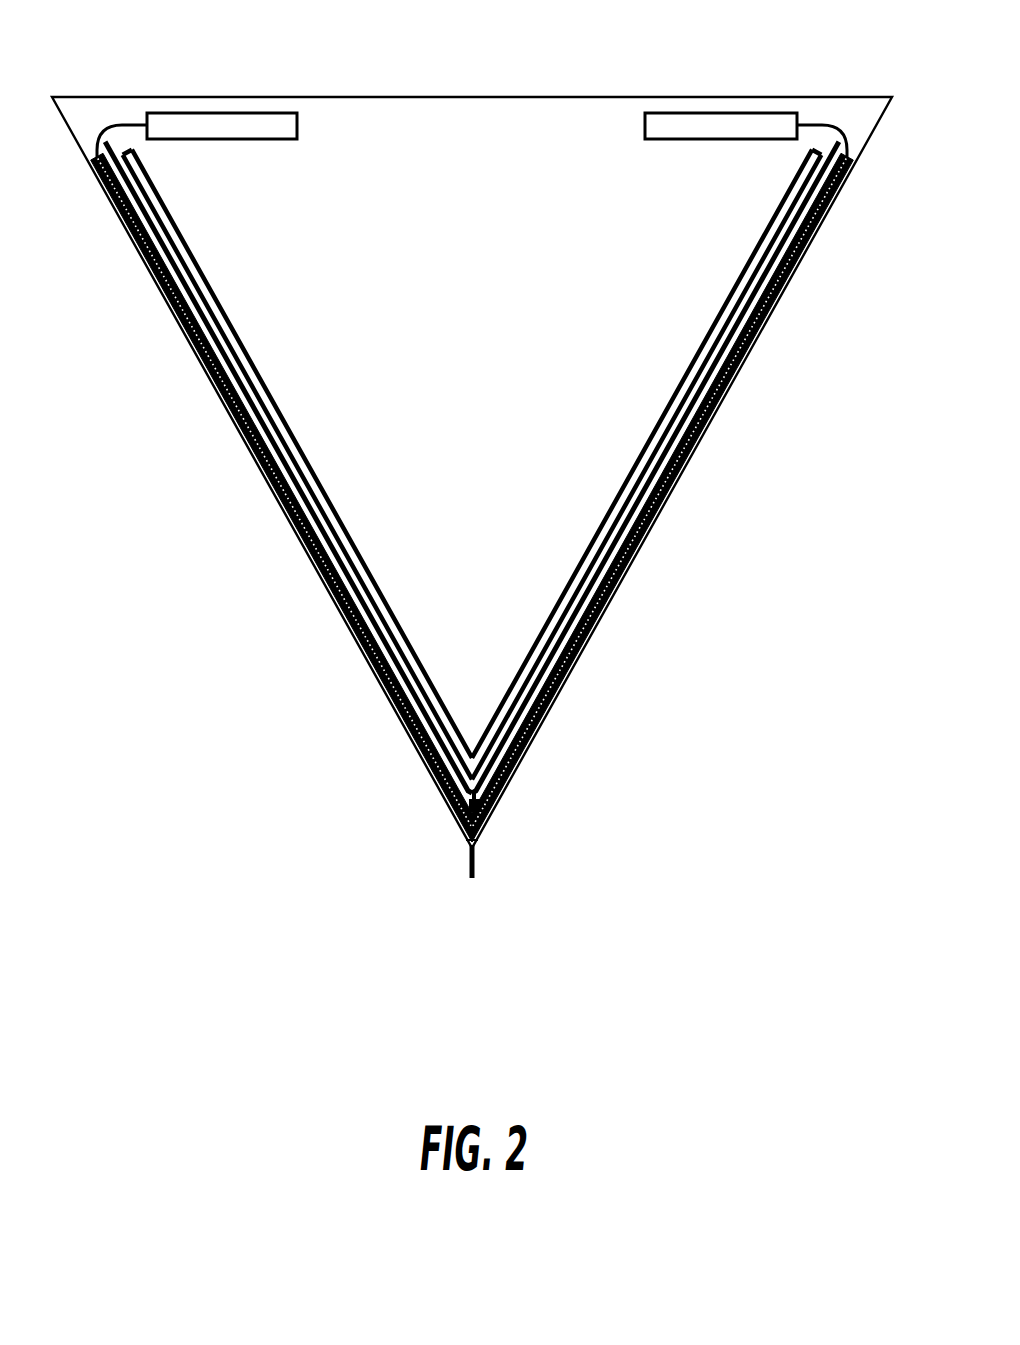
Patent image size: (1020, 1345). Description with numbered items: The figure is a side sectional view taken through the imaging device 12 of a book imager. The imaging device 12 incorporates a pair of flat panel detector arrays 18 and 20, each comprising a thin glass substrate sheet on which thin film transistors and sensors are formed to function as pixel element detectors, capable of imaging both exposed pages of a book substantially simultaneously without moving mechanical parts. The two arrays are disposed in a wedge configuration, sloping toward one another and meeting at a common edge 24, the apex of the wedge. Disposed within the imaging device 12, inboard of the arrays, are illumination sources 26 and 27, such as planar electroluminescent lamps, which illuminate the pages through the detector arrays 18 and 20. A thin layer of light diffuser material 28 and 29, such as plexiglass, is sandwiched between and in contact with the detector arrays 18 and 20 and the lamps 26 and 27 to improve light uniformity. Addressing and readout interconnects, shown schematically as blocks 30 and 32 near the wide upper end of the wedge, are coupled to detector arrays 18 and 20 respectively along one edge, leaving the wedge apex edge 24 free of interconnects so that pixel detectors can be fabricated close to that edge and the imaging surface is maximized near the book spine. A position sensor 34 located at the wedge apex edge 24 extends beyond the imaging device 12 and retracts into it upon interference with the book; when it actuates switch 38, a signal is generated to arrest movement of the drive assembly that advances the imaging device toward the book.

The imaging device 12 is at (224, 752).
The flat panel detector array 18 is at (568, 680).
The flat panel detector array 20 is at (333, 604).
The common edge 24 is at (470, 850).
The illumination source 26 is at (650, 468).
The illumination source 27 is at (290, 444).
The light diffuser material 28 is at (745, 316).
The light diffuser material 29 is at (222, 353).
The addressing and readout interconnects 30 is at (722, 122).
The addressing and readout interconnects 32 is at (241, 122).
The position sensor 34 is at (478, 878).
The switch 38 is at (492, 817).